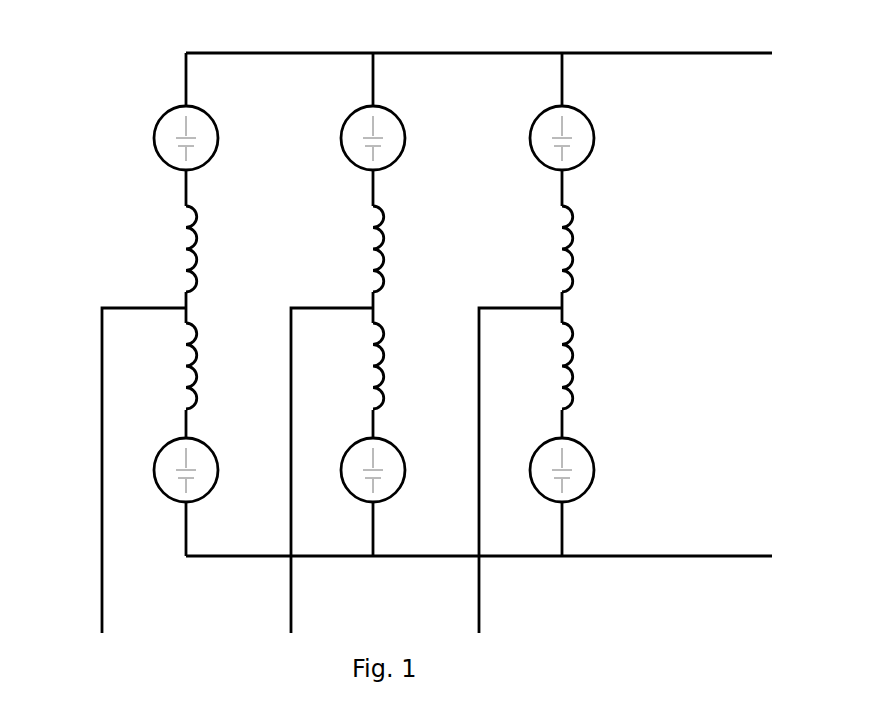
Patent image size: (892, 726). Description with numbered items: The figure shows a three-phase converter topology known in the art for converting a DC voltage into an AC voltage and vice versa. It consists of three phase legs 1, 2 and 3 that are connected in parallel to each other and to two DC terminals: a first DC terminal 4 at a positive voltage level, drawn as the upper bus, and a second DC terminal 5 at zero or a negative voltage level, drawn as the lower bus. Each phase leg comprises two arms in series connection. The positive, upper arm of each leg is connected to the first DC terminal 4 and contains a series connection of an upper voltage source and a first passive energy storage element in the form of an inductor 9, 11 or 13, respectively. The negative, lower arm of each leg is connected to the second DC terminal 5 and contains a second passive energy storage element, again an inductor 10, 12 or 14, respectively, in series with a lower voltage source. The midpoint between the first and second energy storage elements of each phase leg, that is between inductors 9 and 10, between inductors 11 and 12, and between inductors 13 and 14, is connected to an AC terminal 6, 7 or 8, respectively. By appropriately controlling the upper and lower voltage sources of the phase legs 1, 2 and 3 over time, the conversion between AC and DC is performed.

The phase leg 1 is at (184, 190).
The phase leg 2 is at (371, 190).
The phase leg 3 is at (560, 190).
The first DC terminal 4 is at (754, 54).
The second DC terminal 5 is at (752, 554).
The AC terminal 6 is at (100, 608).
The AC terminal 7 is at (289, 608).
The AC terminal 8 is at (477, 608).
The inductor 9 is at (184, 256).
The inductor 10 is at (184, 370).
The inductor 11 is at (371, 256).
The inductor 12 is at (371, 370).
The inductor 13 is at (560, 256).
The inductor 14 is at (560, 370).